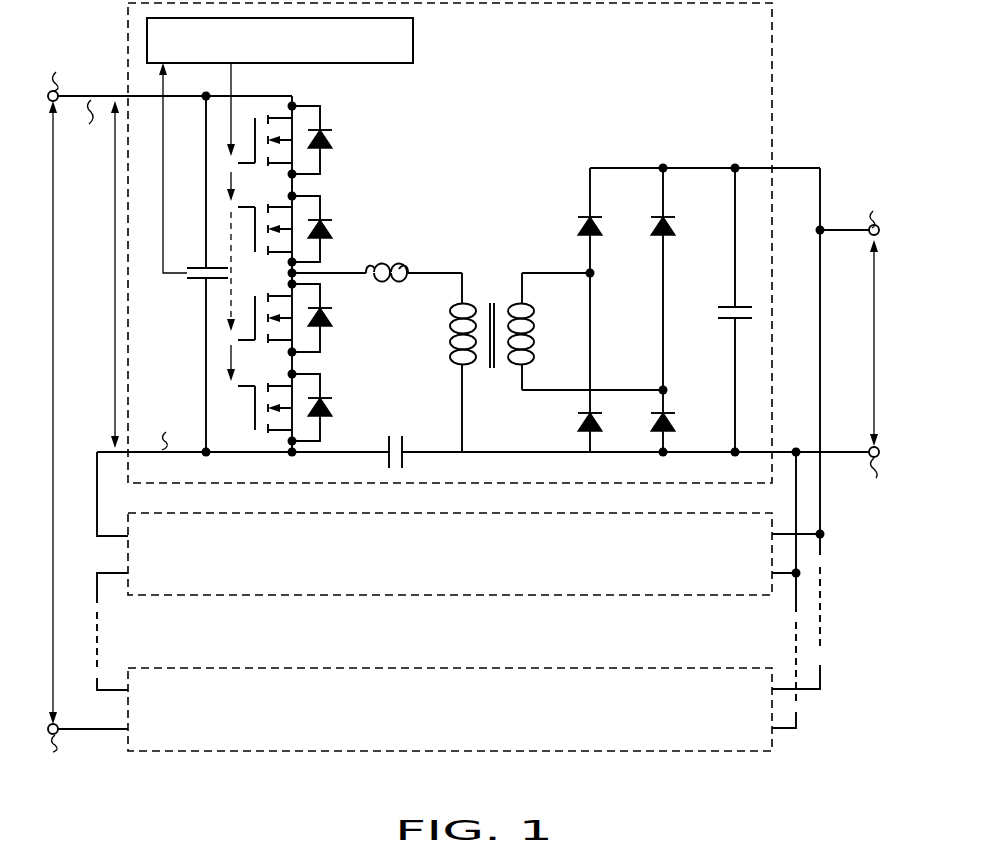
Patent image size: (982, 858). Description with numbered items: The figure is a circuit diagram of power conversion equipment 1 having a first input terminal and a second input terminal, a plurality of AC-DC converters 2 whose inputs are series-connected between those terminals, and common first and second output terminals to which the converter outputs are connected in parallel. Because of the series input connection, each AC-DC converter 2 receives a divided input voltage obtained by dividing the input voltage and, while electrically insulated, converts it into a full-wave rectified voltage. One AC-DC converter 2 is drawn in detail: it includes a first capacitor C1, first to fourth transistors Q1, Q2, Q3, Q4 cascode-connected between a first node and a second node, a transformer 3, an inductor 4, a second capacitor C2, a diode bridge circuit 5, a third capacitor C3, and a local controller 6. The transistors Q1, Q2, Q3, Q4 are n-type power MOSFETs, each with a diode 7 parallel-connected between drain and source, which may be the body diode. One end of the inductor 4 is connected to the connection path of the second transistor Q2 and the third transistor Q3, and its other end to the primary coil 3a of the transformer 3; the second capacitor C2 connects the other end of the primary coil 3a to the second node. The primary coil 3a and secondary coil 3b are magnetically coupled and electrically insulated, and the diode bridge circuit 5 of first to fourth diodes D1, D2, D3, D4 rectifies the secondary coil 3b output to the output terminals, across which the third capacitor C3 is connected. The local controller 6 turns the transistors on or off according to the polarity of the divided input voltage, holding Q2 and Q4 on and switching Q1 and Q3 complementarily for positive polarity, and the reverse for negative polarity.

The power conversion equipment 1 is at (893, 751).
The AC-DC converter 2 is at (773, 42).
The transformer 3 is at (492, 321).
The primary coil 3a is at (469, 292).
The secondary coil 3b is at (516, 314).
The inductor 4 is at (392, 262).
The diode bridge circuit 5 is at (671, 310).
The local controller 6 is at (413, 41).
The diode 7 is at (334, 140).
The first transistor Q1 is at (262, 110).
The second transistor Q2 is at (259, 217).
The third transistor Q3 is at (261, 302).
The fourth transistor Q4 is at (261, 393).
The first capacitor C1 is at (201, 283).
The second capacitor C2 is at (394, 438).
The third capacitor C3 is at (724, 307).
The first diode D1 is at (578, 223).
The second diode D2 is at (578, 427).
The third diode D3 is at (651, 223).
The fourth diode D4 is at (676, 420).